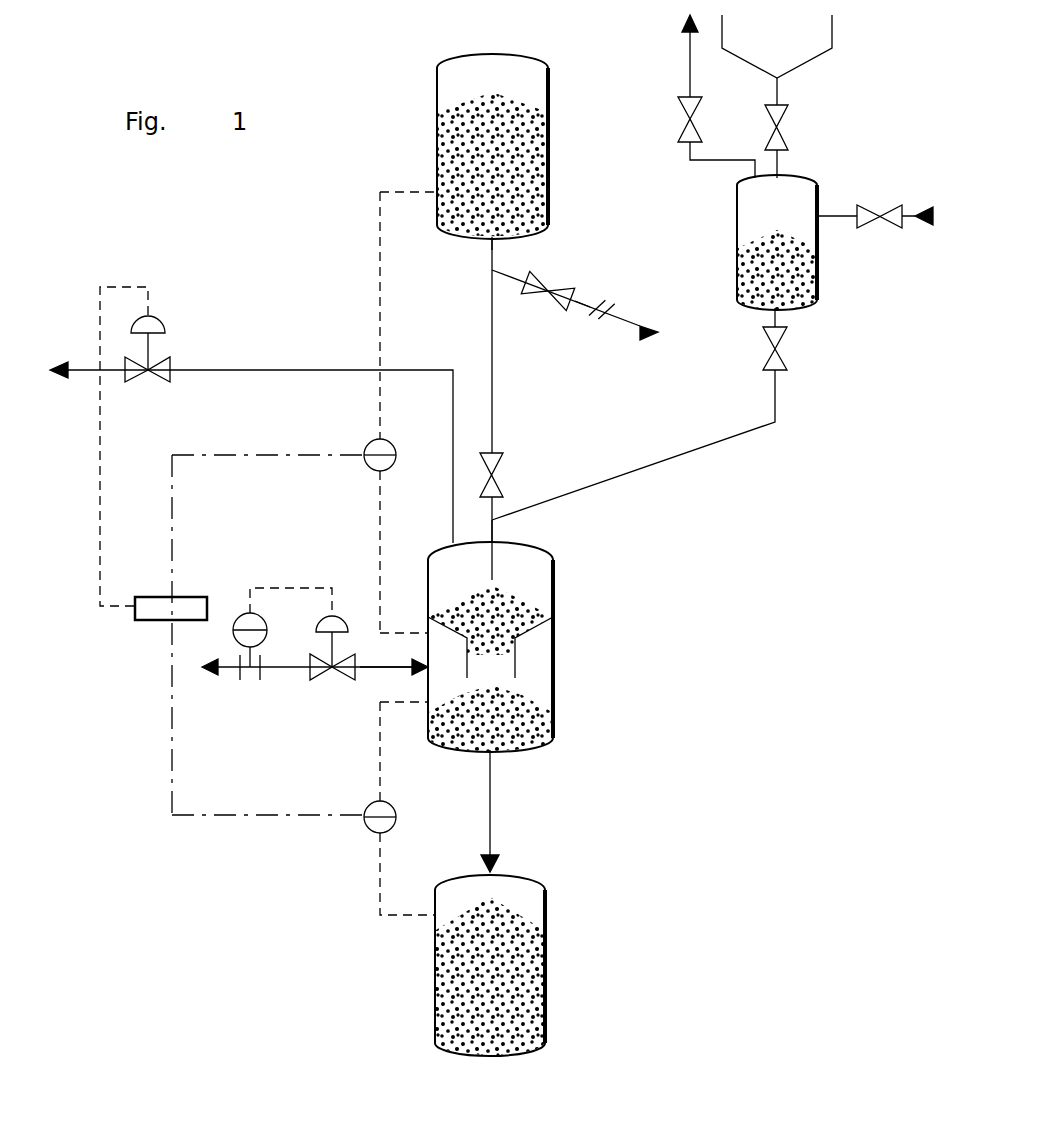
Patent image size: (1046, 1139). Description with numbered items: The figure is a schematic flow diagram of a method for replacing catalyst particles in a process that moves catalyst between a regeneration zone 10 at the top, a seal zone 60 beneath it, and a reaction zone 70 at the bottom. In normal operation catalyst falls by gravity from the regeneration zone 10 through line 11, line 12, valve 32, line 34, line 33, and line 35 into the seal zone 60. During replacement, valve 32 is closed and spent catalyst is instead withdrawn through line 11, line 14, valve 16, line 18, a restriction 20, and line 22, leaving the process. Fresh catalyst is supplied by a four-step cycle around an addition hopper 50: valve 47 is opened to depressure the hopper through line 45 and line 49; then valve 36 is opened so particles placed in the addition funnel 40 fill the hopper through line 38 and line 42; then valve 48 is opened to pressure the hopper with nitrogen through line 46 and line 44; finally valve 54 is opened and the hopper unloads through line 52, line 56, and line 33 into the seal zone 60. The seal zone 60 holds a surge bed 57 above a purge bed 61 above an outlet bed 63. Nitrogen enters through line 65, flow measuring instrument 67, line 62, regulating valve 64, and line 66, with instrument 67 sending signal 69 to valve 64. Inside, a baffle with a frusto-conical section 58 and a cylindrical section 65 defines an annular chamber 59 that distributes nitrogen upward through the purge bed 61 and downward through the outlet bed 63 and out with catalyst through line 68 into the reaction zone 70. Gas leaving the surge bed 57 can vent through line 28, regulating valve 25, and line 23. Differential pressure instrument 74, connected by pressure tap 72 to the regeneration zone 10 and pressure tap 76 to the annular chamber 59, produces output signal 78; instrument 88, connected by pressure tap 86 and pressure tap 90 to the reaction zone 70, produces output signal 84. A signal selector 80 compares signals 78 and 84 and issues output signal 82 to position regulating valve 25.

The regeneration zone 10 is at (437, 112).
The line 11 is at (490, 258).
The line 12 is at (492, 333).
The line 14 is at (500, 273).
The valve 16 is at (548, 285).
The line 18 is at (580, 300).
The restriction 20 is at (610, 309).
The line 22 is at (628, 320).
The line 23 is at (80, 368).
The regulating valve 25 is at (165, 333).
The line 28 is at (280, 370).
The valve 32 is at (503, 465).
The line 33 is at (492, 532).
The line 34 is at (503, 492).
The line 35 is at (493, 567).
The valve 36 is at (788, 135).
The line 38 is at (777, 92).
The addition funnel 40 is at (832, 35).
The line 42 is at (777, 165).
The line 44 is at (830, 215).
The line 45 is at (722, 160).
The line 46 is at (912, 220).
The valve 47 is at (680, 130).
The valve 48 is at (885, 210).
The line 49 is at (690, 72).
The addition hopper 50 is at (817, 262).
The line 52 is at (776, 316).
The valve 54 is at (788, 365).
The line 56 is at (676, 455).
The surge bed 57 is at (504, 644).
The frusto-conical section 58 is at (530, 624).
The annular chamber 59 is at (458, 680).
The seal zone 60 is at (553, 604).
The purge bed 61 is at (504, 680).
The line 62 is at (282, 668).
The outlet bed 63 is at (503, 732).
The regulating valve 64 is at (318, 680).
The line 65 is at (225, 665).
The line 66 is at (382, 670).
The flow measuring instrument 67 is at (238, 615).
The line 68 is at (491, 800).
The signal 69 is at (272, 588).
The reaction zone 70 is at (545, 976).
The pressure tap 72 is at (378, 250).
The differential pressure measuring instrument 74 is at (366, 450).
The pressure tap 76 is at (378, 525).
The output signal 78 is at (205, 455).
The signal selector 80 is at (148, 597).
The output signal 82 is at (100, 490).
The output signal 84 is at (185, 815).
The pressure tap 86 is at (378, 745).
The differential pressure measuring instrument 88 is at (368, 835).
The pressure tap 90 is at (380, 915).